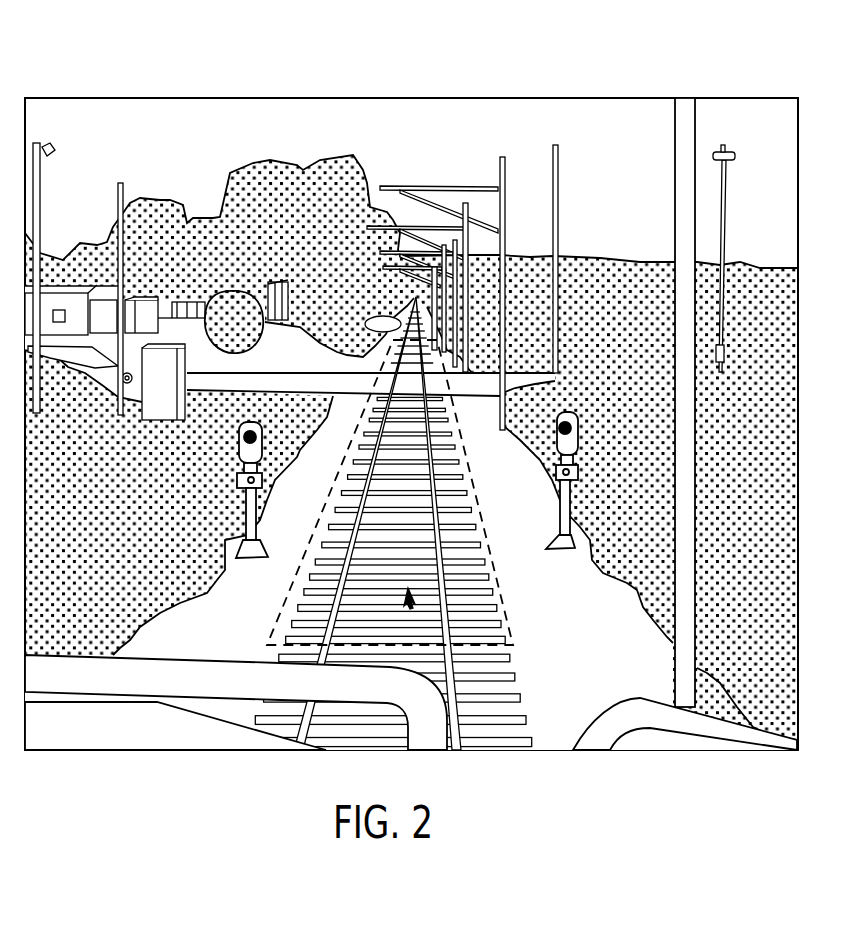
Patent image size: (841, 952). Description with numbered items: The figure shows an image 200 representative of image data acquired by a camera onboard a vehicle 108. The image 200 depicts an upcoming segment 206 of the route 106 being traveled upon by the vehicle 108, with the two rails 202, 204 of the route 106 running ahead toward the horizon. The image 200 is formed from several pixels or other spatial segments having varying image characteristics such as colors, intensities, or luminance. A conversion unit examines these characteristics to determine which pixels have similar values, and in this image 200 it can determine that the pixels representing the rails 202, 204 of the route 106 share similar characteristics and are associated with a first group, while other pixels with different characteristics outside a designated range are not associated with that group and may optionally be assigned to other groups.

The route 106 is at (410, 523).
The vehicle 108 is at (190, 678).
The image 200 is at (718, 60).
The rail 202 is at (353, 497).
The rail 204 is at (437, 537).
The upcoming segment 206 is at (510, 590).